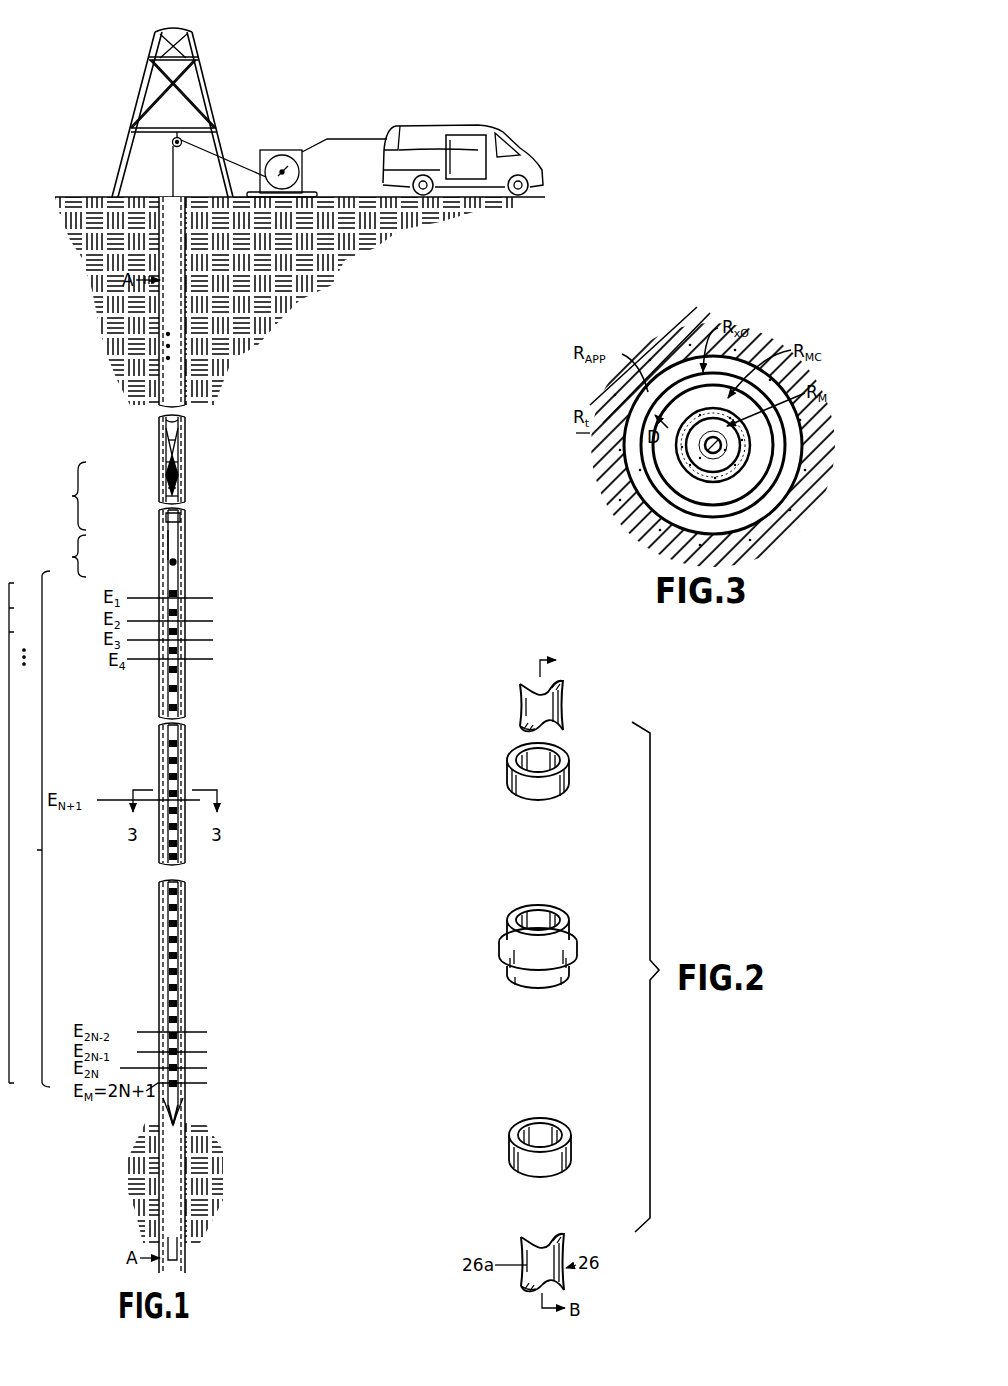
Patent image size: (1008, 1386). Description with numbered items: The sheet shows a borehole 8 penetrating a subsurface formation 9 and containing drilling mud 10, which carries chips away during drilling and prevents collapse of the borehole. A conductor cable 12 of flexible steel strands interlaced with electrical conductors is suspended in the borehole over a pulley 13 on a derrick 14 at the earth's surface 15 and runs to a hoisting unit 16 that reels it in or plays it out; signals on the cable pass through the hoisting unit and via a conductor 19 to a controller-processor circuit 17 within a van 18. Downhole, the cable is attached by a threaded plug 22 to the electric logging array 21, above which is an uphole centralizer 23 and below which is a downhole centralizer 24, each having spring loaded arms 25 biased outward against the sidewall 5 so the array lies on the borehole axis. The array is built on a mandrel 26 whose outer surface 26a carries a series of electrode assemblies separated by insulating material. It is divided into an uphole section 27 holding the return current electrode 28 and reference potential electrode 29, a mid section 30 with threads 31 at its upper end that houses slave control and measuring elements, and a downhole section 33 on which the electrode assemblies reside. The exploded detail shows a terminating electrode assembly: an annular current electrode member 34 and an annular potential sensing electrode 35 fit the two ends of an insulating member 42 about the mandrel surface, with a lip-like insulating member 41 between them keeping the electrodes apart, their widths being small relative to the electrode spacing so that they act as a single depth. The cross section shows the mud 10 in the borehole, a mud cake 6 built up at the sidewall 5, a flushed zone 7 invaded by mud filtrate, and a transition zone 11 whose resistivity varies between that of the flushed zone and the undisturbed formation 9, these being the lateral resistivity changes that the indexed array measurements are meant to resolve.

In FIG. 1, the sidewall 5 is at (178, 562).
In FIG. 3, the sidewall 5 is at (697, 470).
In FIG. 3, the mud cake 6 is at (742, 470).
In FIG. 3, the flushed zone 7 is at (705, 450).
In FIG. 1, the borehole 8 is at (182, 375).
In FIG. 3, the borehole 8 is at (750, 465).
In FIG. 1, the subsurface formation 9 is at (338, 299).
In FIG. 3, the subsurface formation 9 is at (665, 316).
In FIG. 1, the drilling mud 10 is at (158, 353).
In FIG. 3, the drilling mud 10 is at (732, 445).
In FIG. 3, the transition zone 11 is at (655, 385).
In FIG. 1, the conductor cable 12 is at (186, 291).
In FIG. 1, the pulley 13 is at (172, 143).
In FIG. 1, the derrick 14 is at (208, 92).
In FIG. 1, the earth's surface 15 is at (75, 196).
In FIG. 1, the hoisting unit 16 is at (302, 173).
In FIG. 1, the controller-processor circuit 17 is at (468, 137).
In FIG. 1, the van 18 is at (502, 127).
In FIG. 1, the conductor 19 is at (355, 139).
In FIG. 1, the electric logging array 21 is at (210, 722).
In FIG. 3, the electric logging array 21 is at (690, 463).
In FIG. 1, the threaded plug 22 is at (165, 460).
In FIG. 1, the uphole centralizer 23 is at (182, 452).
In FIG. 1, the downhole centralizer 24 is at (186, 1125).
In FIG. 1, the spring loaded arms 25 is at (181, 436).
In FIG. 1, the mandrel 26 is at (187, 517).
In FIG. 2, the mandrel 26 is at (565, 706).
In FIG. 1, the outer surface 26a is at (186, 501).
In FIG. 2, the outer surface 26a is at (526, 710).
In FIG. 1, the uphole section 27 is at (70, 496).
In FIG. 1, the return current electrode 28 is at (180, 465).
In FIG. 1, the reference potential electrode 29 is at (179, 490).
In FIG. 1, the mid section 30 is at (70, 556).
In FIG. 1, the threads 31 is at (171, 541).
In FIG. 1, the downhole section 33 is at (29, 828).
In FIG. 2, the current electrode member 34 is at (569, 760).
In FIG. 2, the potential sensing electrode 35 is at (572, 1138).
In FIG. 2, the insulating member 41 is at (578, 950).
In FIG. 2, the insulating member 42 is at (568, 924).